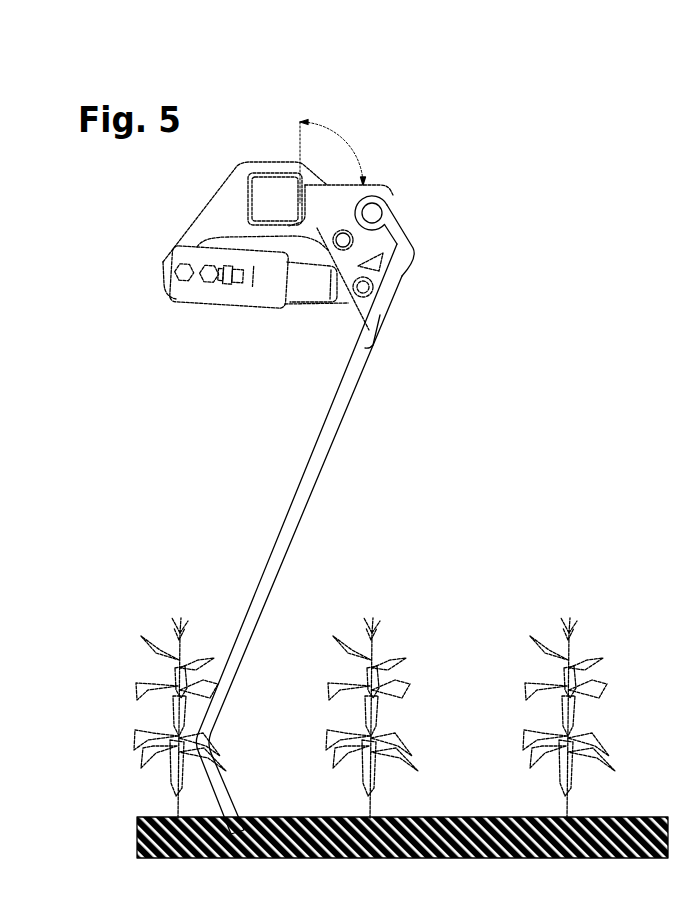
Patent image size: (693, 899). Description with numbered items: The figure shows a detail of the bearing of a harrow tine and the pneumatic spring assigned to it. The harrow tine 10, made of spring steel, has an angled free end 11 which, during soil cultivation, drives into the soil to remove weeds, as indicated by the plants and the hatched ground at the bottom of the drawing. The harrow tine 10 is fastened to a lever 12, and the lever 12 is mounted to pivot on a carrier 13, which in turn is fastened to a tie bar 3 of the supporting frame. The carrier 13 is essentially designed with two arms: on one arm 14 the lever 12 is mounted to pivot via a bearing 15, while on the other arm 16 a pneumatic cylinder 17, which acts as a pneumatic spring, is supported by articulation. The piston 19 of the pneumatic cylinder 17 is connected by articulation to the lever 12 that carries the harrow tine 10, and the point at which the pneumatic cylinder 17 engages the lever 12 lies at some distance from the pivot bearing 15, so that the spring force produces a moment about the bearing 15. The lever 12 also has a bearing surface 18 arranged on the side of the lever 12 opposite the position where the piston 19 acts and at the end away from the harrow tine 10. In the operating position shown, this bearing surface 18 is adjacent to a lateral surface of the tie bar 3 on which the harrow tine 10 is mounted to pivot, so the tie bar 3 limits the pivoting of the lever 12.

The tie bar 3 is at (265, 160).
The harrow tine 10 is at (308, 478).
The angled free end 11 is at (230, 808).
The lever 12 is at (337, 197).
The carrier 13 is at (273, 202).
The arm 14 is at (313, 237).
The bearing 15 is at (343, 240).
The other arm 16 is at (201, 202).
The pneumatic cylinder 17 is at (248, 307).
The bearing surface 18 is at (300, 203).
The piston 19 is at (312, 286).